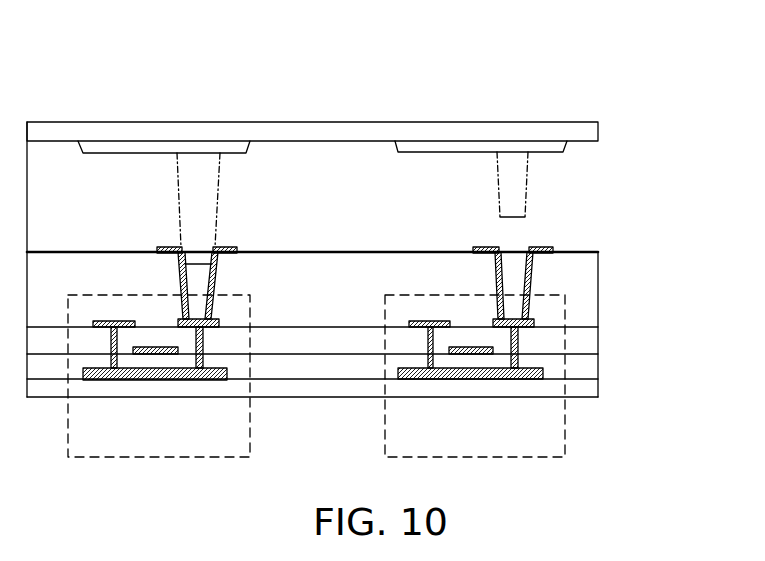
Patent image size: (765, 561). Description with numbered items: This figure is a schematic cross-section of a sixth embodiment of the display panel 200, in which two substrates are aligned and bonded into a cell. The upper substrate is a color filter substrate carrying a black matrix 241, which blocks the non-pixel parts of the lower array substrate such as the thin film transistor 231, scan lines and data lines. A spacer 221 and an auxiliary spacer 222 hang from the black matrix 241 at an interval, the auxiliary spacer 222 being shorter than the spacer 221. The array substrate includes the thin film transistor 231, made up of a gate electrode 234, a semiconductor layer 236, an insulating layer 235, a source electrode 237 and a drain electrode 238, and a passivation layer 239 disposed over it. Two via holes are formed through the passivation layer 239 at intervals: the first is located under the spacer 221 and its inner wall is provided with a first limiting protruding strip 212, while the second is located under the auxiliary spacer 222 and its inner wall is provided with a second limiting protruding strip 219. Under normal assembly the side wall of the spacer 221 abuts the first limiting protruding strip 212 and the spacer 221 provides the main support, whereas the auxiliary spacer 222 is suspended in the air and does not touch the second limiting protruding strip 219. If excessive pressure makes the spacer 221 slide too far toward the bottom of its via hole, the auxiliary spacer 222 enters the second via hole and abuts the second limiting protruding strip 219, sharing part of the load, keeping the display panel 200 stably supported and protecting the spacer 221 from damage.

The display panel 200 is at (96, 44).
The black matrix 241 is at (545, 143).
The spacer 221 is at (200, 195).
The auxiliary spacer 222 is at (513, 198).
The passivation layer 239 is at (582, 285).
The insulating layer 235 is at (585, 368).
The first limiting protruding strip 212 is at (180, 278).
The second limiting protruding strip 219 is at (493, 275).
The thin film transistor 231 is at (250, 378).
The source electrode 237 is at (110, 357).
The gate electrode 234 is at (157, 355).
The semiconductor layer 236 is at (180, 382).
The drain electrode 238 is at (200, 372).